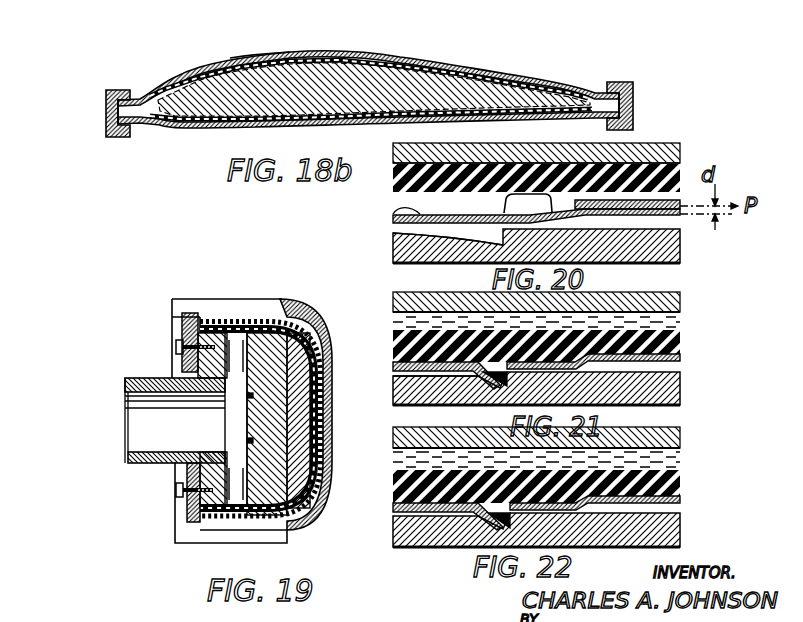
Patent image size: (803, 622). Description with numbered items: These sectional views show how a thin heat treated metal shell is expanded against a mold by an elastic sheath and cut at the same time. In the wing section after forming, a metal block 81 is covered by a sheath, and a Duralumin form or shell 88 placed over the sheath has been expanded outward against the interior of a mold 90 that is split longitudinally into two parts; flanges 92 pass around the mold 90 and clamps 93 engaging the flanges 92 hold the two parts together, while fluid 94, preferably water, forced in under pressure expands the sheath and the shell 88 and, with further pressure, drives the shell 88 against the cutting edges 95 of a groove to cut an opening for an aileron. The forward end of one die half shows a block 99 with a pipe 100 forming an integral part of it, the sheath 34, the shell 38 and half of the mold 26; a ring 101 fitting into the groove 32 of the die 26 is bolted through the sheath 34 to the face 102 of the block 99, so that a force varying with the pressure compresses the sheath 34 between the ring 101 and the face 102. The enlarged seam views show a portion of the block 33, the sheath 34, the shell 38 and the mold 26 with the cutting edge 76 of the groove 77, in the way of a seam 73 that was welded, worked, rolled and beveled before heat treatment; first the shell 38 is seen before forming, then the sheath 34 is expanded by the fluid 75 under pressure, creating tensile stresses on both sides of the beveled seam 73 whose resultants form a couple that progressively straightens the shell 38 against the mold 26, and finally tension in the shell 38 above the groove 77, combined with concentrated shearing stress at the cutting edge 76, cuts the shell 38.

In FIG. 20, the mold 26 is at (668, 240).
In FIG. 21, the mold 26 is at (668, 384).
In FIG. 22, the mold 26 is at (660, 526).
In FIG. 19, the mold 26 is at (321, 520).
In FIG. 19, the groove of the die 32 is at (196, 320).
In FIG. 20, the block 33 is at (506, 158).
In FIG. 21, the block 33 is at (666, 304).
In FIG. 22, the block 33 is at (662, 435).
In FIG. 20, the sheath 34 is at (393, 180).
In FIG. 21, the sheath 34 is at (672, 348).
In FIG. 22, the sheath 34 is at (680, 488).
In FIG. 19, the sheath 34 is at (298, 333).
In FIG. 20, the shell 38 is at (393, 218).
In FIG. 21, the shell 38 is at (648, 368).
In FIG. 22, the shell 38 is at (648, 505).
In FIG. 19, the shell 38 is at (228, 317).
In FIG. 20, the seam 73 is at (592, 212).
In FIG. 21, the fluid 75 is at (656, 321).
In FIG. 22, the fluid 75 is at (656, 456).
In FIG. 20, the cutting edge 76 is at (528, 215).
In FIG. 21, the cutting edge 76 is at (508, 370).
In FIG. 22, the cutting edge 76 is at (512, 510).
In FIG. 20, the groove 77 is at (481, 248).
In FIG. 21, the groove 77 is at (484, 380).
In FIG. 18B, the metal block 81 is at (386, 57).
In FIG. 18B, the form or shell 88 is at (321, 52).
In FIG. 18B, the mold 90 is at (172, 74).
In FIG. 18B, the flanges 92 is at (108, 90).
In FIG. 18B, the clamps 93 is at (108, 125).
In FIG. 18B, the fluid 94 is at (249, 58).
In FIG. 18B, the cutting edges 95 is at (478, 68).
In FIG. 19, the block 99 is at (298, 396).
In FIG. 19, the pipe 100 is at (146, 425).
In FIG. 19, the ring 101 is at (188, 514).
In FIG. 19, the face of the block 102 is at (224, 474).